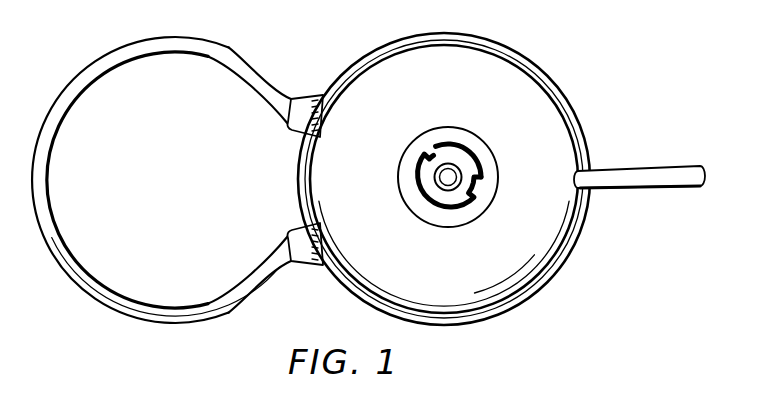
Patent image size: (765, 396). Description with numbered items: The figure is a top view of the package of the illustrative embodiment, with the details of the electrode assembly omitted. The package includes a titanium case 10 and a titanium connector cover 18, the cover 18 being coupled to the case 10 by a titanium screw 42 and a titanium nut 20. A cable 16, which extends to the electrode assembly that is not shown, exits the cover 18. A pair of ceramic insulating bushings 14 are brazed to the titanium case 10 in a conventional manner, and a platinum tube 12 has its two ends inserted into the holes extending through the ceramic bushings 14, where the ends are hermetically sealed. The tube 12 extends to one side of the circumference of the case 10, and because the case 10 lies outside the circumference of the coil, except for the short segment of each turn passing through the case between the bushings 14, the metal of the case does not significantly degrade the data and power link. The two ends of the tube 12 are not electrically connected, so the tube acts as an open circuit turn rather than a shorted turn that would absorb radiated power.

The titanium case 10 is at (447, 166).
The platinum tube 12 is at (113, 53).
The ceramic insulating bushings 14 is at (311, 97).
The cable 16 is at (640, 188).
The titanium connector cover 18 is at (550, 117).
The titanium nut 20 is at (478, 182).
The titanium screw 42 is at (448, 180).